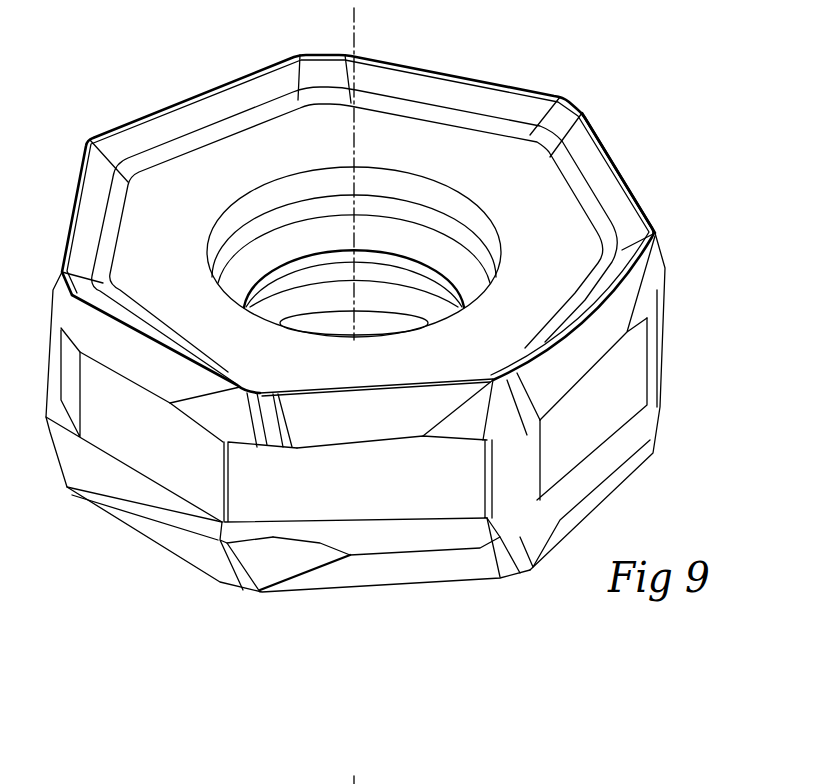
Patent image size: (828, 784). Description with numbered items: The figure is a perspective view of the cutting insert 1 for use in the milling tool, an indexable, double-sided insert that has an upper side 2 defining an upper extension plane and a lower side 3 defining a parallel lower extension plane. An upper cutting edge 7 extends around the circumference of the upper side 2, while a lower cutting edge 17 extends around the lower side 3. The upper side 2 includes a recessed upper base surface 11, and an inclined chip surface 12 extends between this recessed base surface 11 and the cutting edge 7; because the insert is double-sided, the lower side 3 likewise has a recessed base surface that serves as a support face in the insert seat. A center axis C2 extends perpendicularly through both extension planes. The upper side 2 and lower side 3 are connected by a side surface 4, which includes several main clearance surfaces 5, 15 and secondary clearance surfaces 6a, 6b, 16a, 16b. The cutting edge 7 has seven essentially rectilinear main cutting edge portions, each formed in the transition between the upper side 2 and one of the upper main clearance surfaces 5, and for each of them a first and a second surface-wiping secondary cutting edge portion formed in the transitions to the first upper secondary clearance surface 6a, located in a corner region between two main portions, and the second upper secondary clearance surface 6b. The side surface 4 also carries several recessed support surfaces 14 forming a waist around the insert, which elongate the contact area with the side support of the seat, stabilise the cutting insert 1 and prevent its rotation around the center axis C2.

The cutting insert 1 is at (622, 130).
The upper side 2 is at (178, 170).
The lower side 3 is at (570, 533).
The side surface 4 is at (398, 503).
The main clearance surface 5 is at (155, 378).
The first upper secondary clearance surface 6a is at (266, 410).
The second upper secondary clearance surface 6b is at (243, 427).
The upper cutting edge 7 is at (624, 162).
The recessed upper base surface 11 is at (177, 230).
The inclined chip surface 12 is at (469, 110).
The recessed support surface 14 is at (166, 455).
The main clearance surface 15 is at (425, 583).
The secondary clearance surface 16a is at (237, 568).
The secondary clearance surface 16b is at (305, 575).
The lower cutting edge 17 is at (622, 486).
The center axis C2 is at (375, 395).